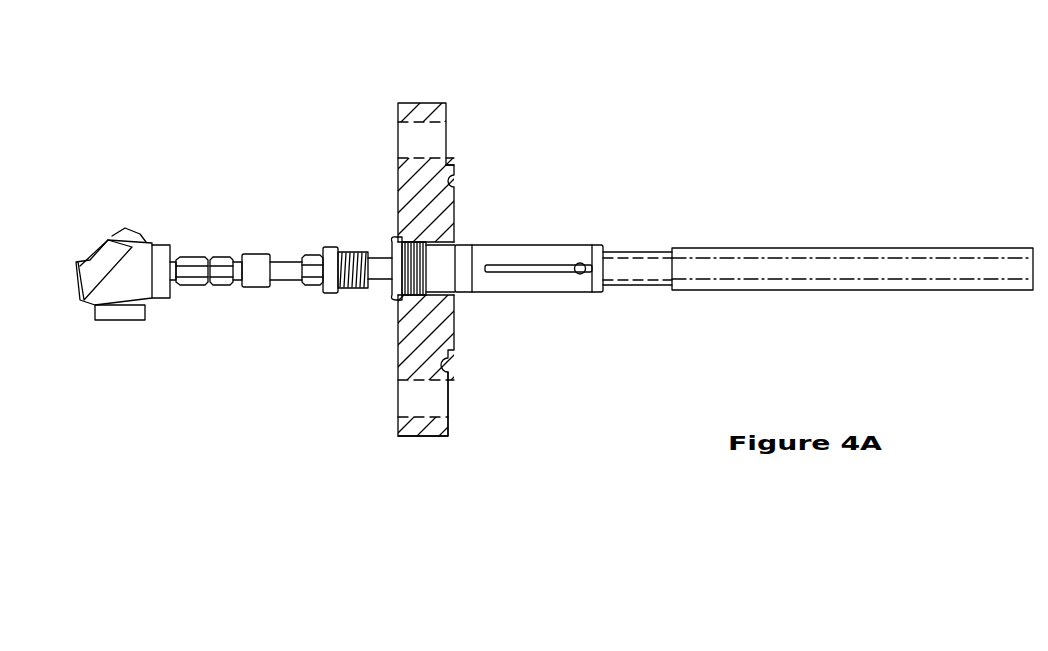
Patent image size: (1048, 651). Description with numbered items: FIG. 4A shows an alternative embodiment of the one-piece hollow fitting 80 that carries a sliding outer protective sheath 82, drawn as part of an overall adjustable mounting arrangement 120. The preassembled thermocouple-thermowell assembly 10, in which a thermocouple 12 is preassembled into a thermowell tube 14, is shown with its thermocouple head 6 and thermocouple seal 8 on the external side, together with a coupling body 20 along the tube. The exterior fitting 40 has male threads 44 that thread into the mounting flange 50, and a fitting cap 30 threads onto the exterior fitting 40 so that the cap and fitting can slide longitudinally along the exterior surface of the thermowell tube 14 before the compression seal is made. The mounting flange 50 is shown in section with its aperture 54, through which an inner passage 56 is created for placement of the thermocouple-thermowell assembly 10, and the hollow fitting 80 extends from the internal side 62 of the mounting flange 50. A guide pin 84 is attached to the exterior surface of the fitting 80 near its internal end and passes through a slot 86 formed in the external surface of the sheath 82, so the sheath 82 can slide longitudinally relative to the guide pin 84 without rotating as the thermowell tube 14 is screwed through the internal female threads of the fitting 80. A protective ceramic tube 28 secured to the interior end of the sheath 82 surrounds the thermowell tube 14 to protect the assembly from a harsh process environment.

The thermocouple-thermowell assembly 10 is at (268, 128).
The thermocouple head 6 is at (123, 229).
The thermocouple seal 8 is at (215, 257).
The coupling body 20 is at (243, 289).
The thermowell tube 14 is at (283, 282).
The fitting cap 30 is at (305, 252).
The exterior fitting 40 is at (320, 294).
The male threads 44 is at (360, 290).
The inner passage 56 is at (430, 289).
The thermocouple 12 is at (398, 175).
The internal side 62 is at (455, 162).
The aperture 54 is at (461, 236).
The mounting flange 50 is at (448, 437).
The fitting 80 is at (465, 293).
The slot 86 is at (520, 273).
The guide pin 84 is at (583, 263).
The sliding outer protective sheath 82 is at (575, 288).
The protective ceramic tube 28 is at (655, 286).
The adjustable mounting assembly 120 is at (561, 132).